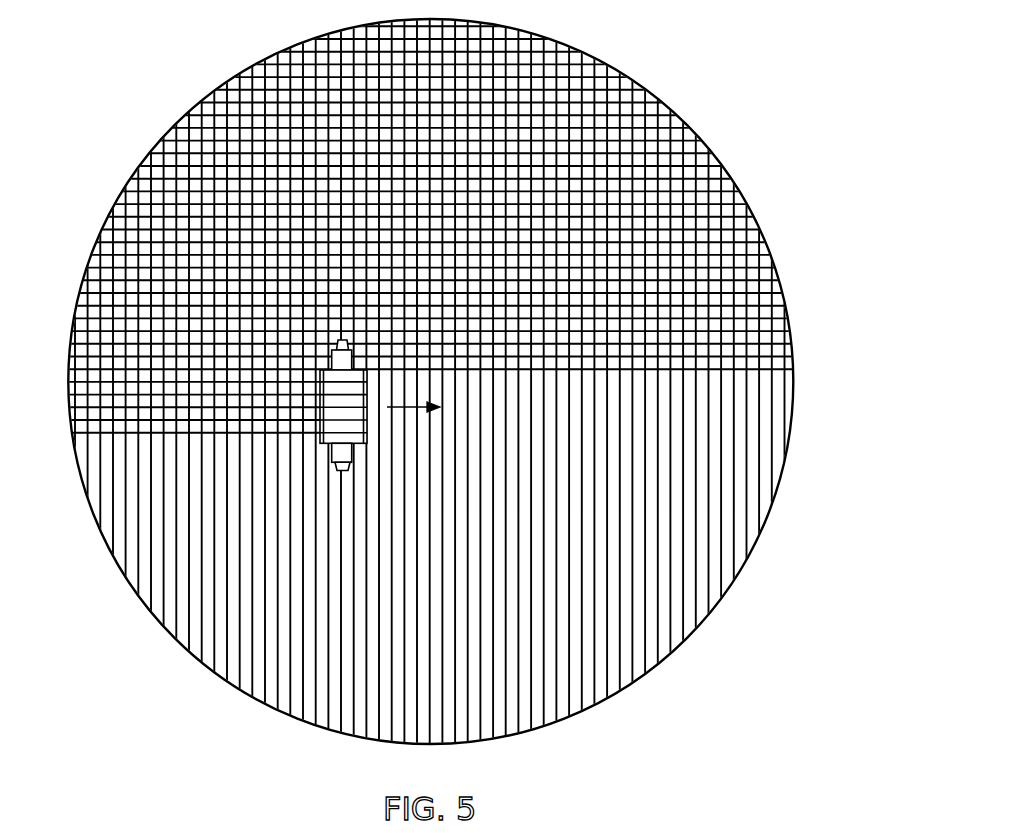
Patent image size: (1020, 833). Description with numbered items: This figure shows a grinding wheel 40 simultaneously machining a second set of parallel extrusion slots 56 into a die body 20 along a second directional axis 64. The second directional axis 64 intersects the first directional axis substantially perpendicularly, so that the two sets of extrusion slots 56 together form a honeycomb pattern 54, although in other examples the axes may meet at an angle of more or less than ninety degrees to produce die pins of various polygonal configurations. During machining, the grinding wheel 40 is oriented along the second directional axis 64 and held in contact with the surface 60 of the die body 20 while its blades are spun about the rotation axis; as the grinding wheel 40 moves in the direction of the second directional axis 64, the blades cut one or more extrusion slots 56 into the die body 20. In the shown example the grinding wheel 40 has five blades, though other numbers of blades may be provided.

The die body 20 is at (193, 71).
The grinding wheel 40 is at (323, 460).
The honeycomb pattern 54 is at (95, 271).
The extrusion slots 56 is at (88, 460).
The surface 60 is at (437, 650).
The second directional axis 64 is at (416, 408).